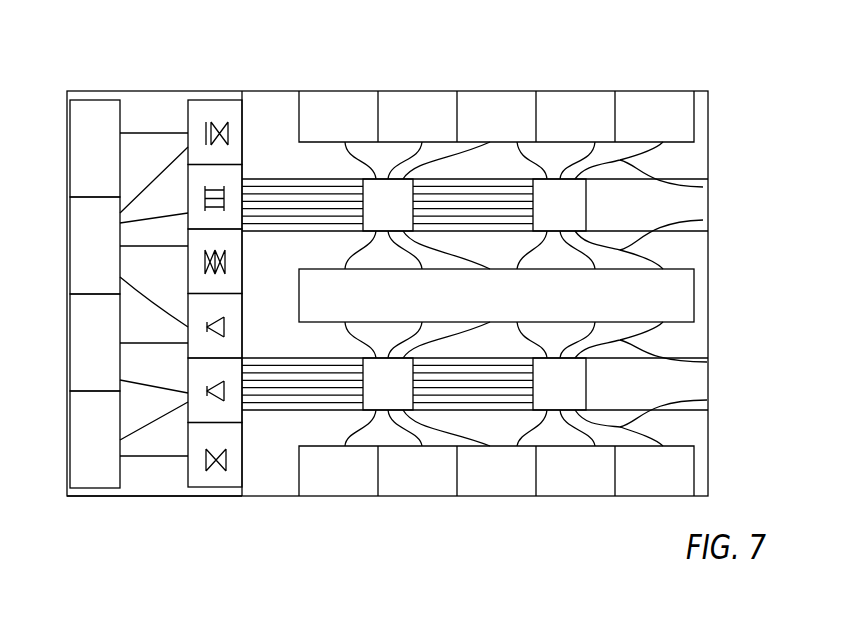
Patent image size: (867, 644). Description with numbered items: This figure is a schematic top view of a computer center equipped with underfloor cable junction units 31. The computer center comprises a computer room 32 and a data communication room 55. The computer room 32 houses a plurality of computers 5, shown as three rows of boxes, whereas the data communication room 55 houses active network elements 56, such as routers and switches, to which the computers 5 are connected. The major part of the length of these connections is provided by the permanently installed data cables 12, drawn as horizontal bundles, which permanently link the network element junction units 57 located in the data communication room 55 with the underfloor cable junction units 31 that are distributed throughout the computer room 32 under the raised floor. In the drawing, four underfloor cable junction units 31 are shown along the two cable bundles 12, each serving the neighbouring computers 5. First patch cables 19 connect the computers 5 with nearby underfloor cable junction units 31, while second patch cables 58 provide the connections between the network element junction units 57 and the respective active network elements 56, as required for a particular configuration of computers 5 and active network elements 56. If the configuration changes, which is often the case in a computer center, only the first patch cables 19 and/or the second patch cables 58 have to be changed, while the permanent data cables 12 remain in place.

The computers 5 is at (331, 128).
The permanent data cables 12 is at (455, 193).
The first patch cables 19 is at (703, 187).
The underfloor cable junction unit 31 is at (376, 215).
The computer room 32 is at (522, 534).
The data communication room 55 is at (158, 508).
The active network elements 56 is at (84, 162).
The network element junction units 57 is at (211, 474).
The second patch cables 58 is at (155, 185).